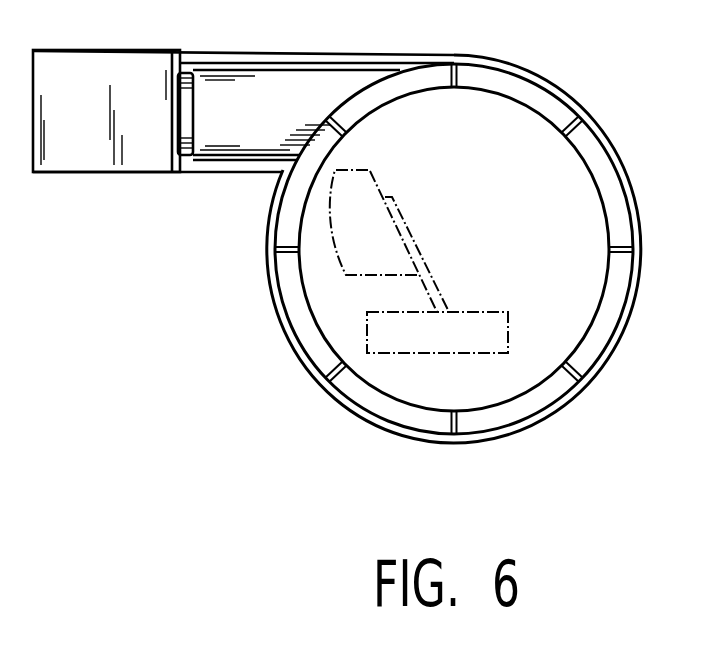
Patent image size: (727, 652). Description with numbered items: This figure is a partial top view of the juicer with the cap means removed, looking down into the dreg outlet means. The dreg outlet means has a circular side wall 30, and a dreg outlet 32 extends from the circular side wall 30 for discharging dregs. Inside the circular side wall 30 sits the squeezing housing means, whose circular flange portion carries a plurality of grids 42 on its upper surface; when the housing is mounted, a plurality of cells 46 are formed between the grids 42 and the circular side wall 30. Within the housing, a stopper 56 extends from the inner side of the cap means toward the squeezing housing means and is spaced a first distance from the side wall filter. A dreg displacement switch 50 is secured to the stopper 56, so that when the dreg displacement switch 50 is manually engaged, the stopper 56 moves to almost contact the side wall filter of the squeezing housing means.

The circular side wall 30 is at (478, 249).
The dreg outlet 32 is at (268, 128).
The grids 42 is at (626, 381).
The cells 46 is at (488, 227).
The dreg displacement switch 50 is at (489, 311).
The stopper 56 is at (366, 183).